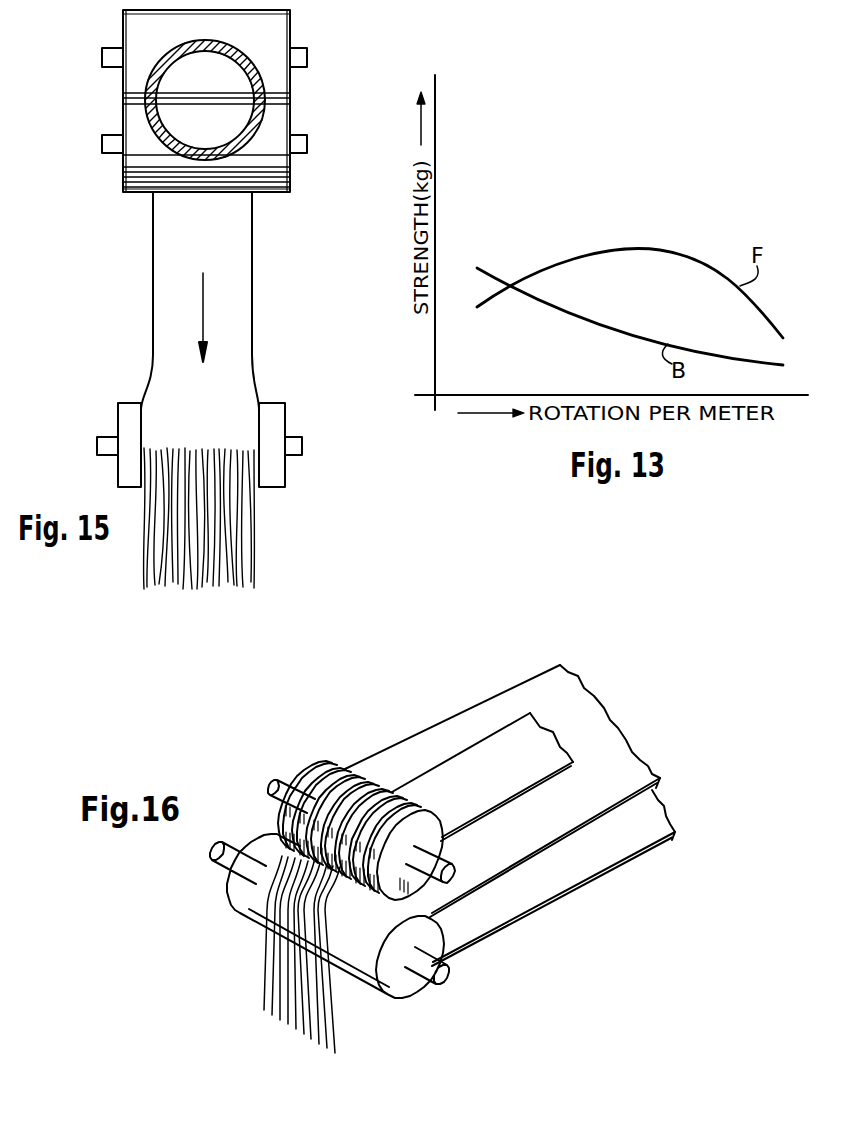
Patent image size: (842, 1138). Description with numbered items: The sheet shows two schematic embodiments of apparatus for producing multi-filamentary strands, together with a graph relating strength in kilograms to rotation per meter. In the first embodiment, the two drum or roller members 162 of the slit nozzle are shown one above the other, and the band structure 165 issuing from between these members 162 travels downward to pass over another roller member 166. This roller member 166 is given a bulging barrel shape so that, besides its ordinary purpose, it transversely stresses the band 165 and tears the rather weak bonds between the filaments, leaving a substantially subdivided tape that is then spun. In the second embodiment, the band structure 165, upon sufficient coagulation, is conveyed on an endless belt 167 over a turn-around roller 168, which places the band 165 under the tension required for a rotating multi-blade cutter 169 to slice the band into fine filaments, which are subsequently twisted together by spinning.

In FIG. 15, the drum or roller members 162 is at (288, 43).
In FIG. 15, the band structure 165 is at (243, 334).
In FIG. 16, the band structure 165 is at (510, 791).
In FIG. 15, the roller member 166 is at (273, 412).
In FIG. 16, the endless belt 167 is at (625, 786).
In FIG. 16, the turn-around roller 168 is at (417, 943).
In FIG. 16, the rotating multi-blade cutter 169 is at (422, 822).